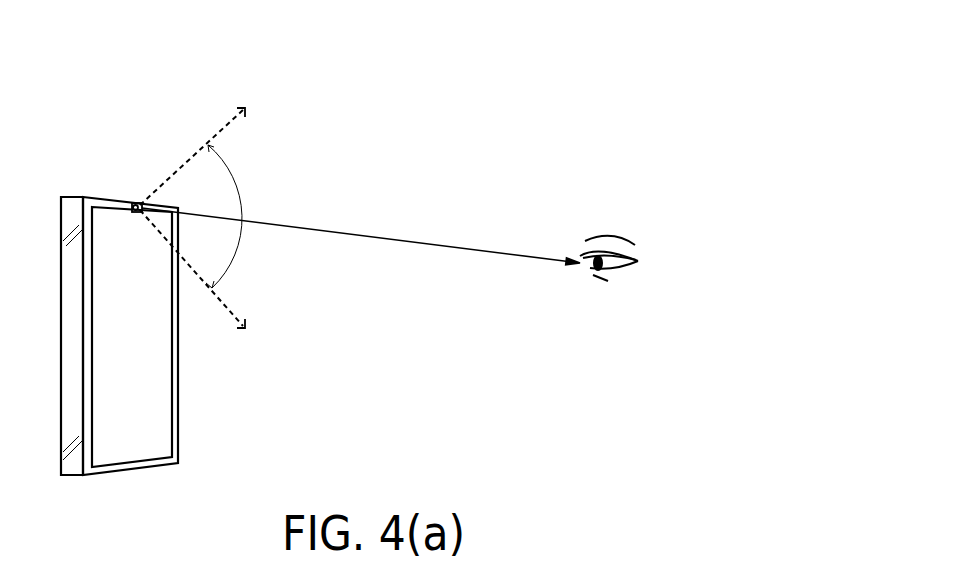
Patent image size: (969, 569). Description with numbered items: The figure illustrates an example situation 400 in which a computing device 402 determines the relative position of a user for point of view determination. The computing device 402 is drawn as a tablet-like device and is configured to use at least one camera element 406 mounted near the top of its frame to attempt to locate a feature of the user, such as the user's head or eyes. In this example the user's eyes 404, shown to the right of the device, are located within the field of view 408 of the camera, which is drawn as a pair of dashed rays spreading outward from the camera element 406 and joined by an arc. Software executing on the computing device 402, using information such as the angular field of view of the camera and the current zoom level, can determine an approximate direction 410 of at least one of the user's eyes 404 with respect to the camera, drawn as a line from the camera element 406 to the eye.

The example situation 400 is at (718, 98).
The computing device 402 is at (102, 197).
The user's eyes 404 is at (658, 248).
The camera element 406 is at (139, 203).
The field of view 408 is at (222, 132).
The approximate direction 410 is at (427, 245).